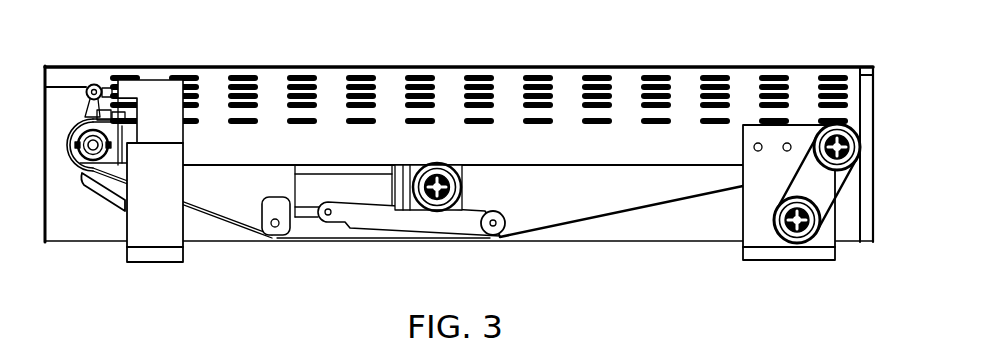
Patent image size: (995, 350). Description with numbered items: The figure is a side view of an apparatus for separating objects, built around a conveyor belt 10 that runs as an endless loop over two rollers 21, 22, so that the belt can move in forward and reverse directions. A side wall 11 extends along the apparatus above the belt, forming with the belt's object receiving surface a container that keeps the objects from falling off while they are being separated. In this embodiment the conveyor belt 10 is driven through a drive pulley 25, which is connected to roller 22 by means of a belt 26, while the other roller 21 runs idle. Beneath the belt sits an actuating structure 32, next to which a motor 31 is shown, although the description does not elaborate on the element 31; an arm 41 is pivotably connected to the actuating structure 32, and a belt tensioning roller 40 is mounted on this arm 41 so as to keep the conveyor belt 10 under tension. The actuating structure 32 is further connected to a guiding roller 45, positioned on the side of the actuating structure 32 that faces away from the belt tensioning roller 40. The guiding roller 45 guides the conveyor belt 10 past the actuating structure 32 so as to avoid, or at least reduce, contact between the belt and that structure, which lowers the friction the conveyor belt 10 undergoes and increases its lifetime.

The conveyor belt 10 is at (600, 221).
The side wall 11 is at (448, 85).
The roller 21 is at (64, 127).
The roller 22 is at (849, 120).
The drive pulley 25 is at (820, 233).
The belt 26 is at (797, 186).
The motor 31 is at (461, 187).
The actuating structure 32 is at (375, 168).
The belt tensioning roller 40 is at (500, 212).
The arm 41 is at (410, 238).
The guiding roller 45 is at (277, 239).